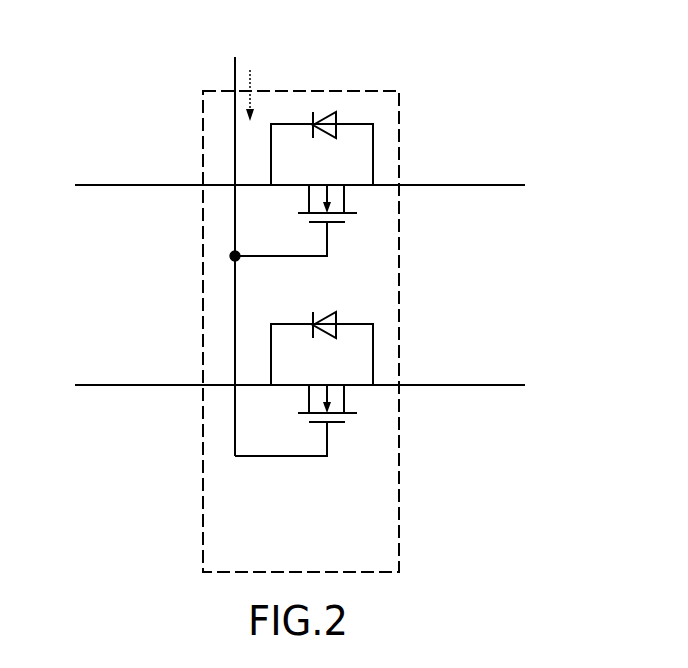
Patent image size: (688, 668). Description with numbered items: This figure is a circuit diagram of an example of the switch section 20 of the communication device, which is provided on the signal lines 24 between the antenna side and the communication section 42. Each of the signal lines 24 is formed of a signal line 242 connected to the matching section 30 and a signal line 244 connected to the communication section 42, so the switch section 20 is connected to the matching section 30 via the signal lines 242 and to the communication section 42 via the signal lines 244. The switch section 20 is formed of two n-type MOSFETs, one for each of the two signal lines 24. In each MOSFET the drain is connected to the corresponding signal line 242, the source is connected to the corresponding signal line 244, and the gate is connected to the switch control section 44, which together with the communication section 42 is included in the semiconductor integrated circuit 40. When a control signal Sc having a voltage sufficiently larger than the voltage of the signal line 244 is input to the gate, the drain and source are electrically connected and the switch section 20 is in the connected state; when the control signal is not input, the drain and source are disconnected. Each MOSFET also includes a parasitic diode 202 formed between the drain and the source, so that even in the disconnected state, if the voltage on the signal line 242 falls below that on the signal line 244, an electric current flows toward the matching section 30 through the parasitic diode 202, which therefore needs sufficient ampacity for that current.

The switch section 20 is at (330, 91).
The parasitic diode 202 is at (337, 118).
The signal lines 24 is at (295, 285).
The signal line 242 is at (163, 185).
The signal line 244 is at (435, 185).
The matching section 30 is at (83, 285).
The semiconductor integrated circuit 40 is at (388, 245).
The communication section 42 is at (517, 288).
The switch control section 44 is at (247, 245).